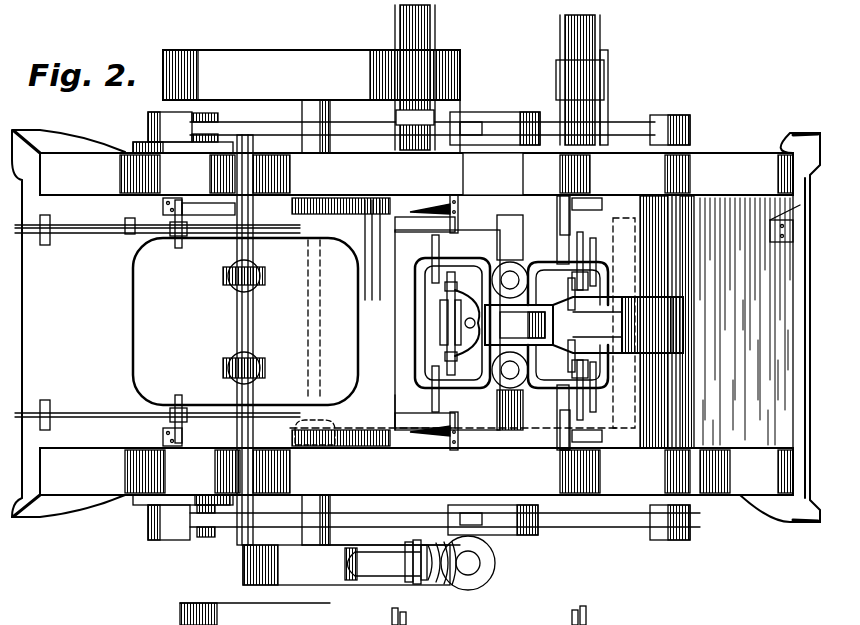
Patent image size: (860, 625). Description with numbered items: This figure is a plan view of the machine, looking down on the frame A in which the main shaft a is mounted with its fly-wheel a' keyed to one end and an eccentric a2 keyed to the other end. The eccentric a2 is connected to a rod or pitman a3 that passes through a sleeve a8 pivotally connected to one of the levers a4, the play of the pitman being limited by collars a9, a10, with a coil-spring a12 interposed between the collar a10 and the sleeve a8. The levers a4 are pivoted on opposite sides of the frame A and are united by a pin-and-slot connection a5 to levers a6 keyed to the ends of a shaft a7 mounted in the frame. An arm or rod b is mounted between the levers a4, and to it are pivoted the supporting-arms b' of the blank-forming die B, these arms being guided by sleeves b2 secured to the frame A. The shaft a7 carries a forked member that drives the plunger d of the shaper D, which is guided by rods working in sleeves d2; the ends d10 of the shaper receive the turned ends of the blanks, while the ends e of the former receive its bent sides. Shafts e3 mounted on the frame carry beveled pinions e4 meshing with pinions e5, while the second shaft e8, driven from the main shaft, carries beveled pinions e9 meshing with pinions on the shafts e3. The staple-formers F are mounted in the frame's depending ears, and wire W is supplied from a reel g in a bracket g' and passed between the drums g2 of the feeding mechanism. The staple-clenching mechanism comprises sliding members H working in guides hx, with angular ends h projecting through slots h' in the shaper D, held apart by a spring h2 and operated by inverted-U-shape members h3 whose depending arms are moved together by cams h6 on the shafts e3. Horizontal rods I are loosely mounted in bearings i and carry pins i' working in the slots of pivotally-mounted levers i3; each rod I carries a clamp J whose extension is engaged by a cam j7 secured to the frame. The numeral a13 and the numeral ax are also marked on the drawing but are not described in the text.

The frame A is at (90, 510).
The blank-forming die B is at (245, 321).
The arm or rod b is at (244, 340).
The supporting-arms b' is at (259, 321).
The sleeves b2 is at (240, 288).
The horizontal rods I is at (93, 232).
The bearings i is at (54, 322).
The pins i' is at (179, 210).
The pivotally-mounted levers i3 is at (128, 221).
The clamp J is at (184, 240).
The cam j7 is at (186, 198).
The wire W is at (395, 36).
The reel g is at (567, 60).
The bracket g' is at (547, 97).
The drums g2 is at (555, 148).
The main shaft a is at (381, 521).
The fly-wheel a' is at (385, 205).
The eccentric a2 is at (243, 568).
The rod or pitman a3 is at (380, 570).
The levers a4 is at (343, 134).
The pin-and-slot connection a5 is at (495, 125).
The levers a6 is at (608, 128).
The shaft a7 is at (676, 399).
The sleeve a8 is at (450, 585).
The collar a9 is at (405, 551).
The collar a10 is at (490, 578).
The coil-spring a12 is at (420, 582).
The screw a13 is at (383, 614).
The rod ax is at (590, 278).
The plunger d is at (584, 325).
The sleeves d2 is at (500, 268).
The ends of the shaper d10 is at (415, 388).
The shaper D is at (467, 337).
The ends of the former e is at (545, 265).
The shafts e3 is at (605, 205).
The beveled pinions e4 is at (635, 295).
The beveled pinions e5 is at (670, 212).
The second shaft e8 is at (320, 335).
The beveled pinions e9 is at (318, 445).
The staple-formers F is at (616, 360).
The angular ends h is at (426, 323).
The slots h' is at (423, 328).
The spring h2 is at (455, 318).
The inverted-U-shape members h3 is at (432, 245).
The cams h6 is at (420, 210).
The guides hx is at (390, 360).
The sliding members H is at (460, 282).